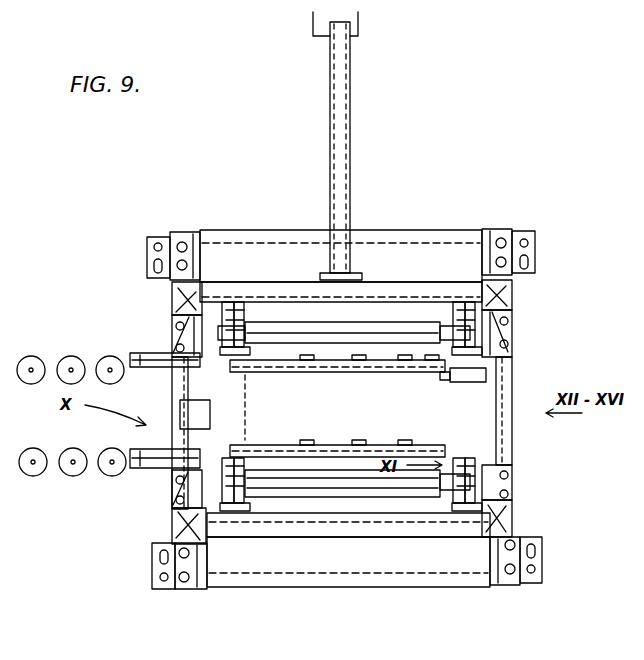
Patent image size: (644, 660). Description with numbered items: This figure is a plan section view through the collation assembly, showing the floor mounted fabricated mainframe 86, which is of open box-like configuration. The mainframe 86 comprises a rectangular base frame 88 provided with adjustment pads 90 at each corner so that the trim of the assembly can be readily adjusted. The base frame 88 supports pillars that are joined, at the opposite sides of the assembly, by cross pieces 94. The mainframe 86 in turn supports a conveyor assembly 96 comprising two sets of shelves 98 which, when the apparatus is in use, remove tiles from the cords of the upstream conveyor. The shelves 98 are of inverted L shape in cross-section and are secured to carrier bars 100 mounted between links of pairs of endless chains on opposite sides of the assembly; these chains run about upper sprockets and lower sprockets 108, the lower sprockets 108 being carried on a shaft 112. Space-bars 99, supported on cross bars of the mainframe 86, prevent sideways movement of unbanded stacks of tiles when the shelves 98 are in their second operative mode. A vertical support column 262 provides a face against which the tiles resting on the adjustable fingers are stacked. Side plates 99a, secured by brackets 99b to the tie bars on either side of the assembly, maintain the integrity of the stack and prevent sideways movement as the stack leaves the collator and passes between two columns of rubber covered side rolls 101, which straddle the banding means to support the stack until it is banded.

The mainframe 86 is at (135, 497).
The base frame 88 is at (176, 295).
The adjustment pads 90 is at (163, 238).
The cross pieces 94 is at (430, 231).
The conveyor assembly 96 is at (478, 408).
The shelves 98 is at (425, 378).
The space-bars 99 is at (302, 373).
The side plates 99a is at (134, 450).
The brackets 99b is at (133, 354).
The carrier bars 100 is at (362, 364).
The side rolls 101 is at (70, 473).
The lower sprockets 108 is at (233, 305).
The shaft 112 is at (288, 312).
The vertical support column 262 is at (200, 415).